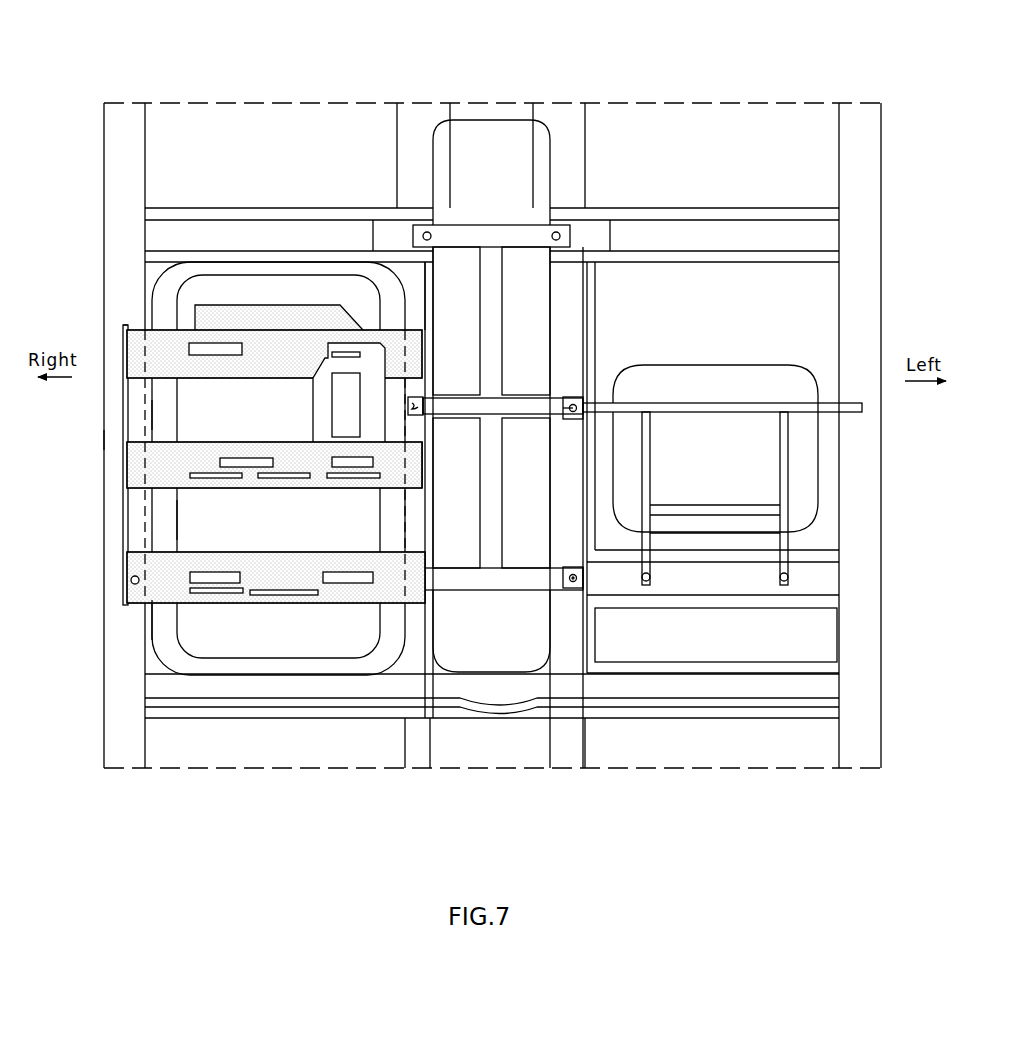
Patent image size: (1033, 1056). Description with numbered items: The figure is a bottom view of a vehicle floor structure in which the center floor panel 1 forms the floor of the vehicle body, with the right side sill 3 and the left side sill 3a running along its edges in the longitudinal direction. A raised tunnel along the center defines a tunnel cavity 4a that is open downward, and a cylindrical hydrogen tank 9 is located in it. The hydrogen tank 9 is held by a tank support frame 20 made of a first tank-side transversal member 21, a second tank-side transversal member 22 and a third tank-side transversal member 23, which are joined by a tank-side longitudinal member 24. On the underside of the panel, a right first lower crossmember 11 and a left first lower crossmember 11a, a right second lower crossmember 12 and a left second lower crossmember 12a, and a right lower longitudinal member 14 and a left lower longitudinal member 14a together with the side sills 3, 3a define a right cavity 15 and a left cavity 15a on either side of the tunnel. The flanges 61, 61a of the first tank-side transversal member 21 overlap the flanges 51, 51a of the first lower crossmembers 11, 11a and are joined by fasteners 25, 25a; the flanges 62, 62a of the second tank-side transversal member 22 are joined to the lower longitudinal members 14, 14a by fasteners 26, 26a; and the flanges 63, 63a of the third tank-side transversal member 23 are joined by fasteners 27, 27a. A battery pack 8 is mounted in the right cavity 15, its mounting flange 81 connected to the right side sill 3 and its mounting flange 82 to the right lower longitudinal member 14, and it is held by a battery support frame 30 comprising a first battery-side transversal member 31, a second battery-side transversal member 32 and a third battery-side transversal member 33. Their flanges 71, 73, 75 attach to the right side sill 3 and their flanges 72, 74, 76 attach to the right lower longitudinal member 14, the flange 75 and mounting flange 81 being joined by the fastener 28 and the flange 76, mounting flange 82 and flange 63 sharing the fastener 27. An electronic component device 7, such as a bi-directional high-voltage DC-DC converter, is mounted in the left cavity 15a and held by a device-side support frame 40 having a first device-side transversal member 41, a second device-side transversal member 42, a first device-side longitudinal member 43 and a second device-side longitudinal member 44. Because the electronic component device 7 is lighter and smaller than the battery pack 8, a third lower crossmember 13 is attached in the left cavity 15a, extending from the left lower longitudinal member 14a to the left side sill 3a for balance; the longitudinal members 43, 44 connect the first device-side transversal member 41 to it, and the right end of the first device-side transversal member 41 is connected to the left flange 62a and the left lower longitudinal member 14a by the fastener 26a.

The center floor panel 1 is at (762, 103).
The right side sill 3 is at (115, 660).
The left side sill 3a is at (862, 640).
The tunnel cavity 4a is at (510, 112).
The electronic component device 7 is at (747, 375).
The battery pack 8 is at (188, 405).
The hydrogen tank 9 is at (487, 137).
The right first lower crossmember 11 is at (242, 235).
The left first lower crossmember 11a is at (775, 222).
The right second lower crossmember 12 is at (235, 690).
The left second lower crossmember 12a is at (735, 690).
The third lower crossmember 13 is at (780, 540).
The right lower longitudinal member 14 is at (395, 650).
The left lower longitudinal member 14a is at (612, 272).
The right cavity 15 is at (157, 271).
The left cavity 15a is at (815, 305).
The tank support frame 20 is at (492, 222).
The first tank-side transversal member 21 is at (580, 275).
The second tank-side transversal member 22 is at (527, 400).
The third tank-side transversal member 23 is at (510, 590).
The tank-side longitudinal member 24 is at (497, 512).
The right fastener 25 is at (462, 225).
The left fastener 25a is at (537, 223).
The right fastener 26 is at (420, 395).
The left fastener 26a is at (598, 407).
The right fastener 27 is at (412, 600).
The left fastener 27a is at (585, 587).
The fastener 28 is at (130, 577).
The battery support frame 30 is at (100, 440).
The first battery-side transversal member 31 is at (300, 310).
The second battery-side transversal member 32 is at (282, 440).
The third battery-side transversal member 33 is at (248, 552).
The device-side support frame 40 is at (797, 463).
The first device-side transversal member 41 is at (712, 410).
The second device-side transversal member 42 is at (703, 510).
The first device-side longitudinal member 43 is at (655, 470).
The second device-side longitudinal member 44 is at (795, 489).
The flange 51 is at (427, 234).
The flange 51a is at (556, 234).
The right flange 61 is at (412, 238).
The left flange 61a is at (572, 238).
The right flange 62 is at (412, 418).
The left flange 62a is at (580, 393).
The right flange 63 is at (410, 567).
The left flange 63a is at (583, 575).
The flange 71 is at (140, 345).
The flange 72 is at (405, 342).
The flange 73 is at (140, 470).
The flange 74 is at (417, 477).
The flange 75 is at (135, 565).
The flange 76 is at (408, 552).
The mounting flange 81 is at (125, 407).
The mounting flange 82 is at (412, 320).